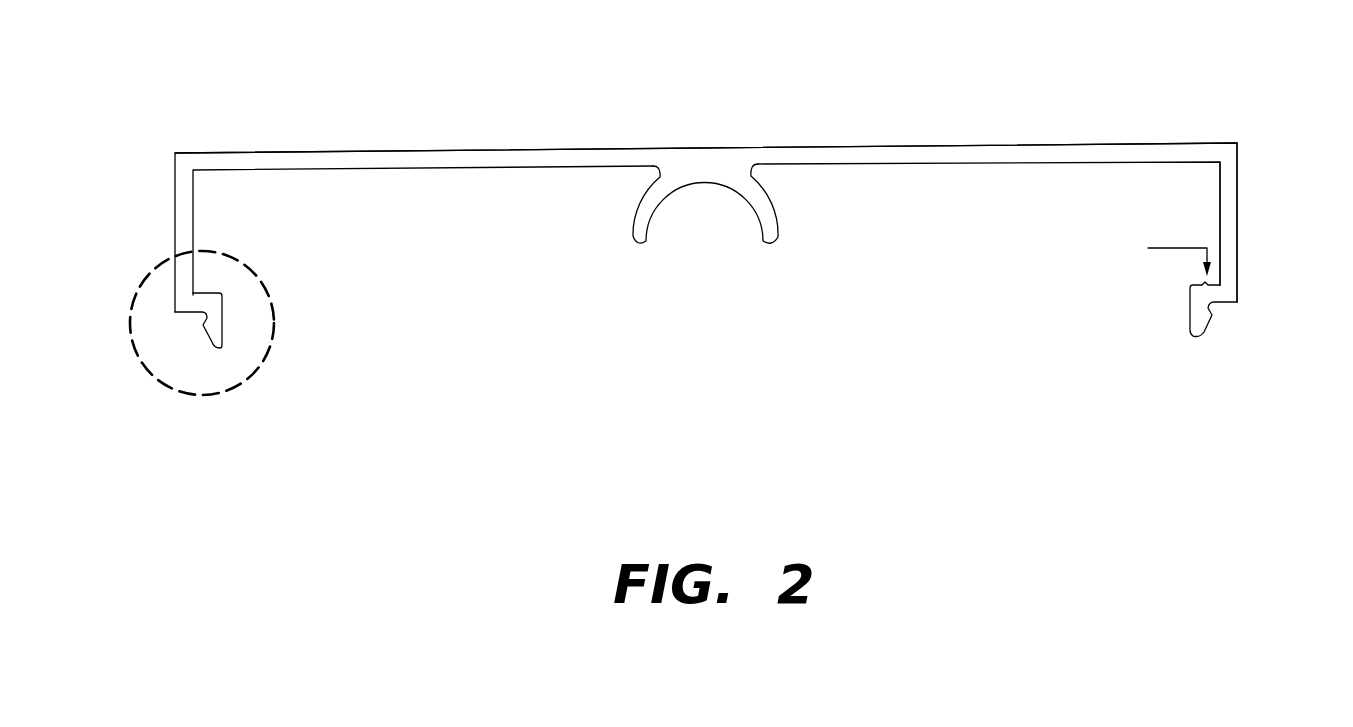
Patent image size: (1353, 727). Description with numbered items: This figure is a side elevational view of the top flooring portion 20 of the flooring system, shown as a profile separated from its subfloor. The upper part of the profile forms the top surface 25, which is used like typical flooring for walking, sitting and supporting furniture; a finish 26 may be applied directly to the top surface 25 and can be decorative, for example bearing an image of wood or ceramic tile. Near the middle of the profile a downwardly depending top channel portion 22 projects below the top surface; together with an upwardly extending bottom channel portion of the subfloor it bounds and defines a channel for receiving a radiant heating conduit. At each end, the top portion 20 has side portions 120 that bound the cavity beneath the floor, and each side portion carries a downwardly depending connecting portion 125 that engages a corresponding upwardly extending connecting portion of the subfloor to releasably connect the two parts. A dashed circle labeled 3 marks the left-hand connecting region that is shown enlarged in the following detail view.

The top flooring portion 20 is at (480, 303).
The finish 26 is at (443, 150).
The top surface 25 is at (945, 145).
The top channel portion 22 is at (630, 223).
The side portion 120 is at (1238, 237).
The connecting portion 125 is at (1207, 308).
The detail circle of FIG. 3 is at (130, 323).